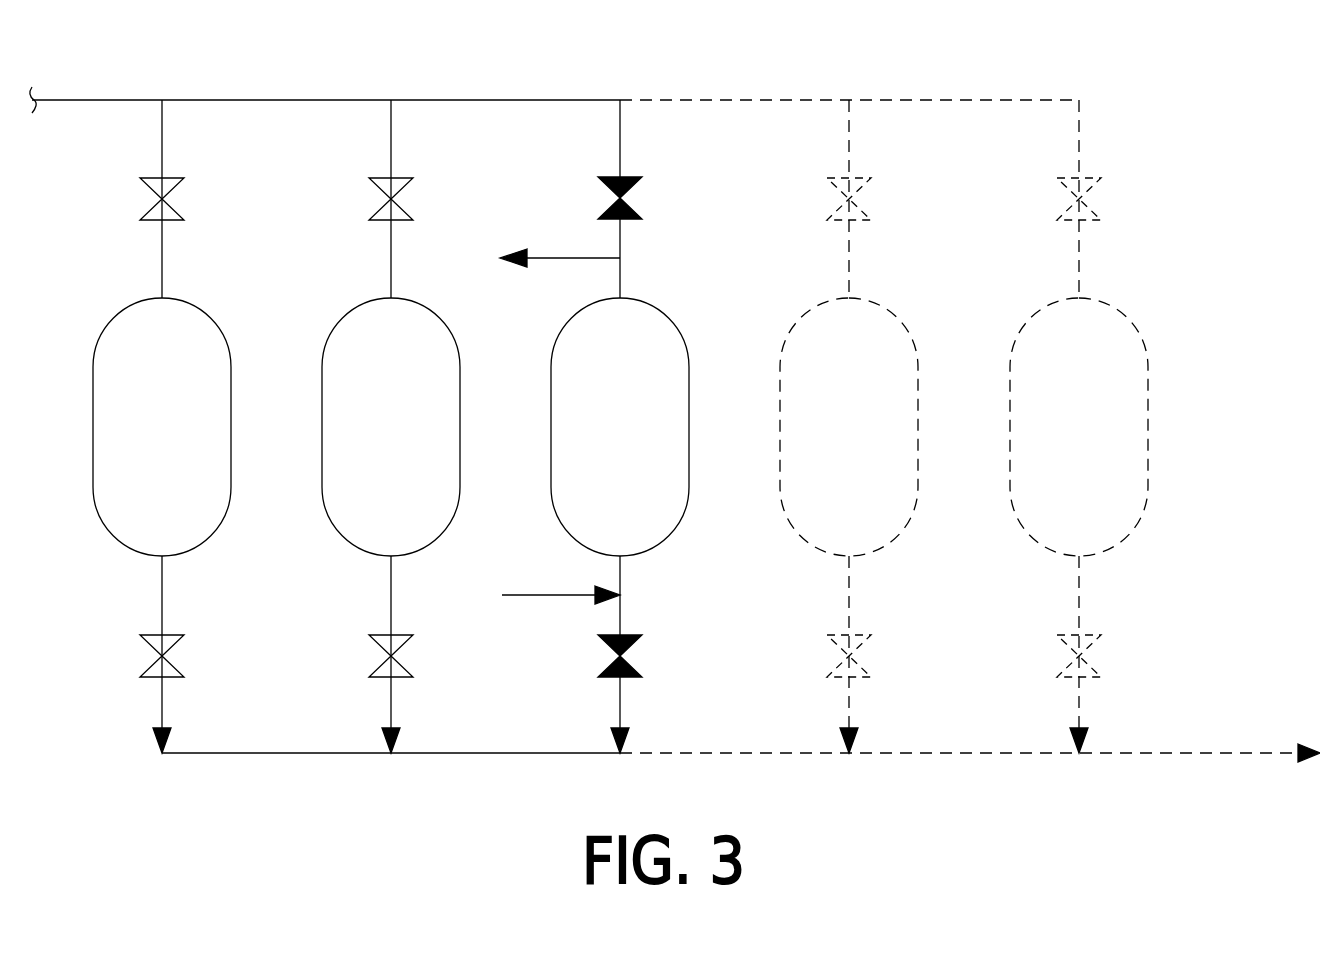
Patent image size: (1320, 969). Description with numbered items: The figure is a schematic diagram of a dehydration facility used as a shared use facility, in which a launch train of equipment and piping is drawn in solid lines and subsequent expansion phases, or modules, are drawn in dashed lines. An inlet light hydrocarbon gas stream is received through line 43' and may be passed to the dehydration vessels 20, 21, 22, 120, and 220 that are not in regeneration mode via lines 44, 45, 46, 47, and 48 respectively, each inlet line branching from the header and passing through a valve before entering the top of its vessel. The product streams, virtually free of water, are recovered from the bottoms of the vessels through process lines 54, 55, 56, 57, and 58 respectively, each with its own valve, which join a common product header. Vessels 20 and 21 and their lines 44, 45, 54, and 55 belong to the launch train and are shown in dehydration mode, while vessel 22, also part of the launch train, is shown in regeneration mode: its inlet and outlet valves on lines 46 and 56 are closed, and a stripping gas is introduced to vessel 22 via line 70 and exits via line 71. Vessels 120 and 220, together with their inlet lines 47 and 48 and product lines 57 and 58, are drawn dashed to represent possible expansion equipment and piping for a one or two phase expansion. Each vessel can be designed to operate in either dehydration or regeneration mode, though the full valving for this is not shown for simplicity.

The inlet gas line 43' is at (555, 120).
The inlet line 44 is at (162, 157).
The inlet line 45 is at (391, 157).
The inlet line 46 is at (620, 157).
The inlet line 47 is at (849, 157).
The inlet line 48 is at (1079, 157).
The dehydration vessel 20 is at (231, 369).
The dehydration vessel 21 is at (460, 369).
The dehydration vessel 22 is at (689, 369).
The dehydration vessel 120 is at (918, 369).
The dehydration vessel 220 is at (1148, 369).
The process line 54 is at (162, 703).
The process line 55 is at (391, 703).
The process line 56 is at (620, 703).
The process line 57 is at (849, 703).
The process line 58 is at (1079, 703).
The stripping gas inlet line 70 is at (537, 595).
The stripping gas outlet line 71 is at (545, 258).